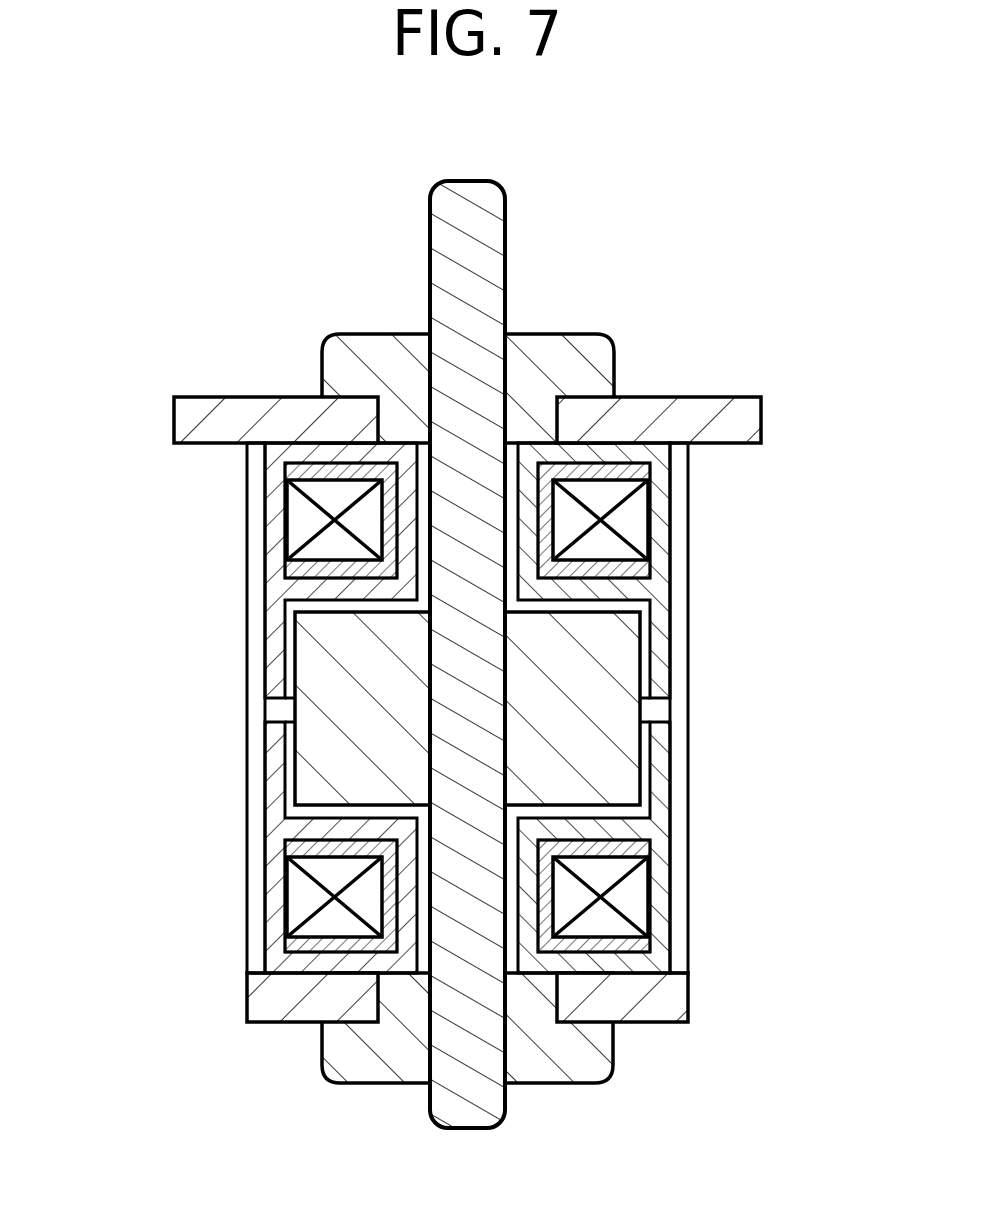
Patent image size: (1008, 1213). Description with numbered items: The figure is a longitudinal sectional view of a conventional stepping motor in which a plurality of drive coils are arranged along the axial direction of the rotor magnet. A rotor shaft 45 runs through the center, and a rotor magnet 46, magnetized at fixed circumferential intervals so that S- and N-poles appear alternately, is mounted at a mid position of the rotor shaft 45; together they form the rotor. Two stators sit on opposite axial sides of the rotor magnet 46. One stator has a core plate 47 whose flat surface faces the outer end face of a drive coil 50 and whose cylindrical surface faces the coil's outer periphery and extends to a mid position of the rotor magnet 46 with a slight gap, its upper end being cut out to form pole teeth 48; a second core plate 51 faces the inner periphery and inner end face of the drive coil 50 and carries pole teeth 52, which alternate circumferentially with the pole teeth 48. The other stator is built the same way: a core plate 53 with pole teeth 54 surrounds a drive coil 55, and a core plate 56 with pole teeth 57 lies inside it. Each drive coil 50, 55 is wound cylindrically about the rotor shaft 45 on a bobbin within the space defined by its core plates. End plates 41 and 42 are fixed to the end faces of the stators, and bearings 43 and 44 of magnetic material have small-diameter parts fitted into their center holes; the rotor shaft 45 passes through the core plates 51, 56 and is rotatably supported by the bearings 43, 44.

The end plate 41 is at (647, 1010).
The end plate 42 is at (717, 407).
The bearing 43 is at (380, 1062).
The bearing 44 is at (363, 350).
The rotor shaft 45 is at (487, 205).
The rotor magnet 46 is at (598, 713).
The core plate 47 is at (662, 928).
The pole teeth 48 is at (662, 770).
The drive coil 50 is at (630, 887).
The core plate 51 is at (407, 902).
The pole teeth 52 is at (275, 752).
The core plate 53 is at (275, 475).
The pole teeth 54 is at (272, 658).
The drive coil 55 is at (300, 525).
The core plate 56 is at (530, 498).
The pole teeth 57 is at (660, 603).